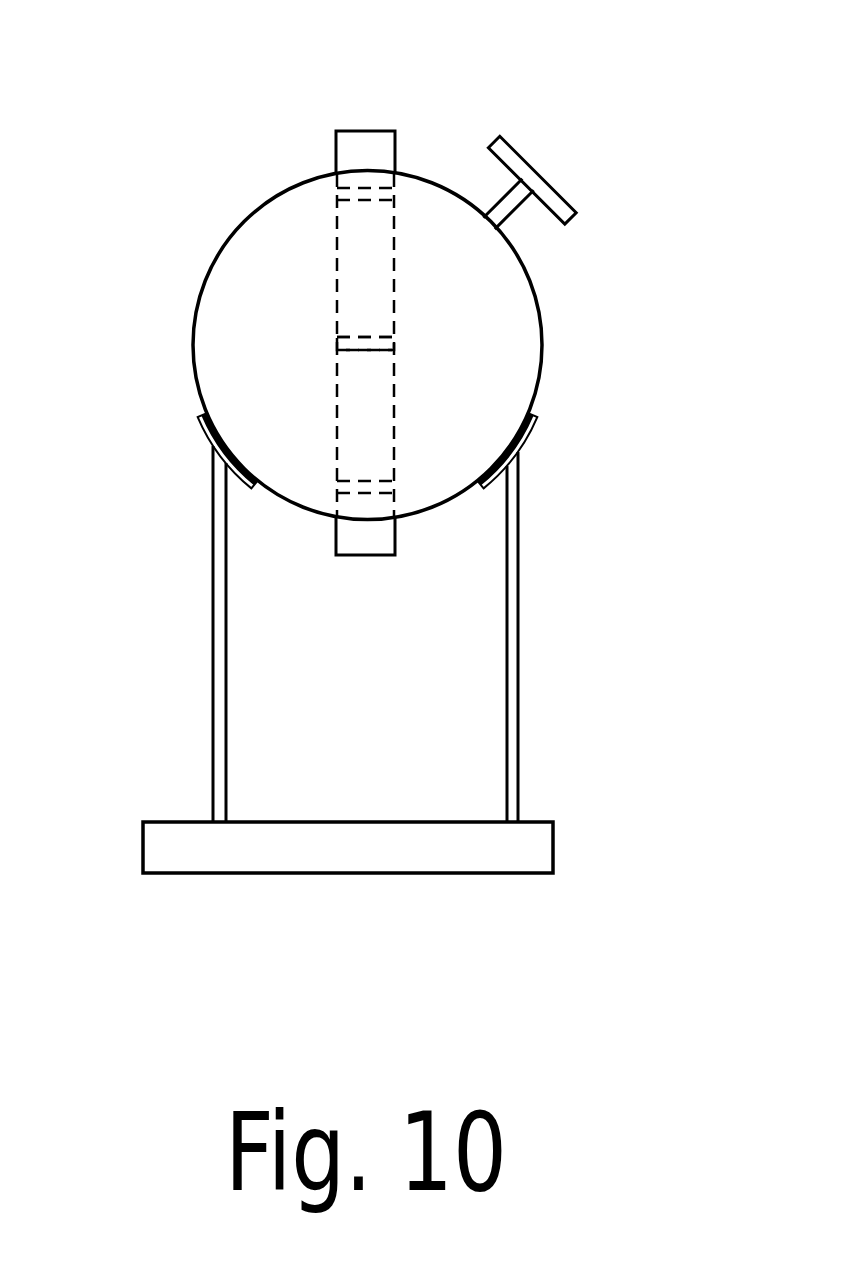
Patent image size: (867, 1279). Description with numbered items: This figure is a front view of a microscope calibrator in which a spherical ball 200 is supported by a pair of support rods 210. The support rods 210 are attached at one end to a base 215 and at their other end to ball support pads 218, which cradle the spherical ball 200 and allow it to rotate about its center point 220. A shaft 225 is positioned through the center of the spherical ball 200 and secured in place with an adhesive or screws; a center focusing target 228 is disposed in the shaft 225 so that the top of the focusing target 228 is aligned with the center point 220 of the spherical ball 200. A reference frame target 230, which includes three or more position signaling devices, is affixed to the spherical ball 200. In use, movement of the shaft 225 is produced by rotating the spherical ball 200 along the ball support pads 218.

The spherical ball 200 is at (208, 268).
The support rods 210 is at (218, 608).
The base 215 is at (535, 847).
The ball support pads 218 is at (197, 430).
The center point 220 is at (365, 333).
The shaft 225 is at (395, 143).
The center focusing target 228 is at (340, 342).
The reference frame target 230 is at (567, 192).